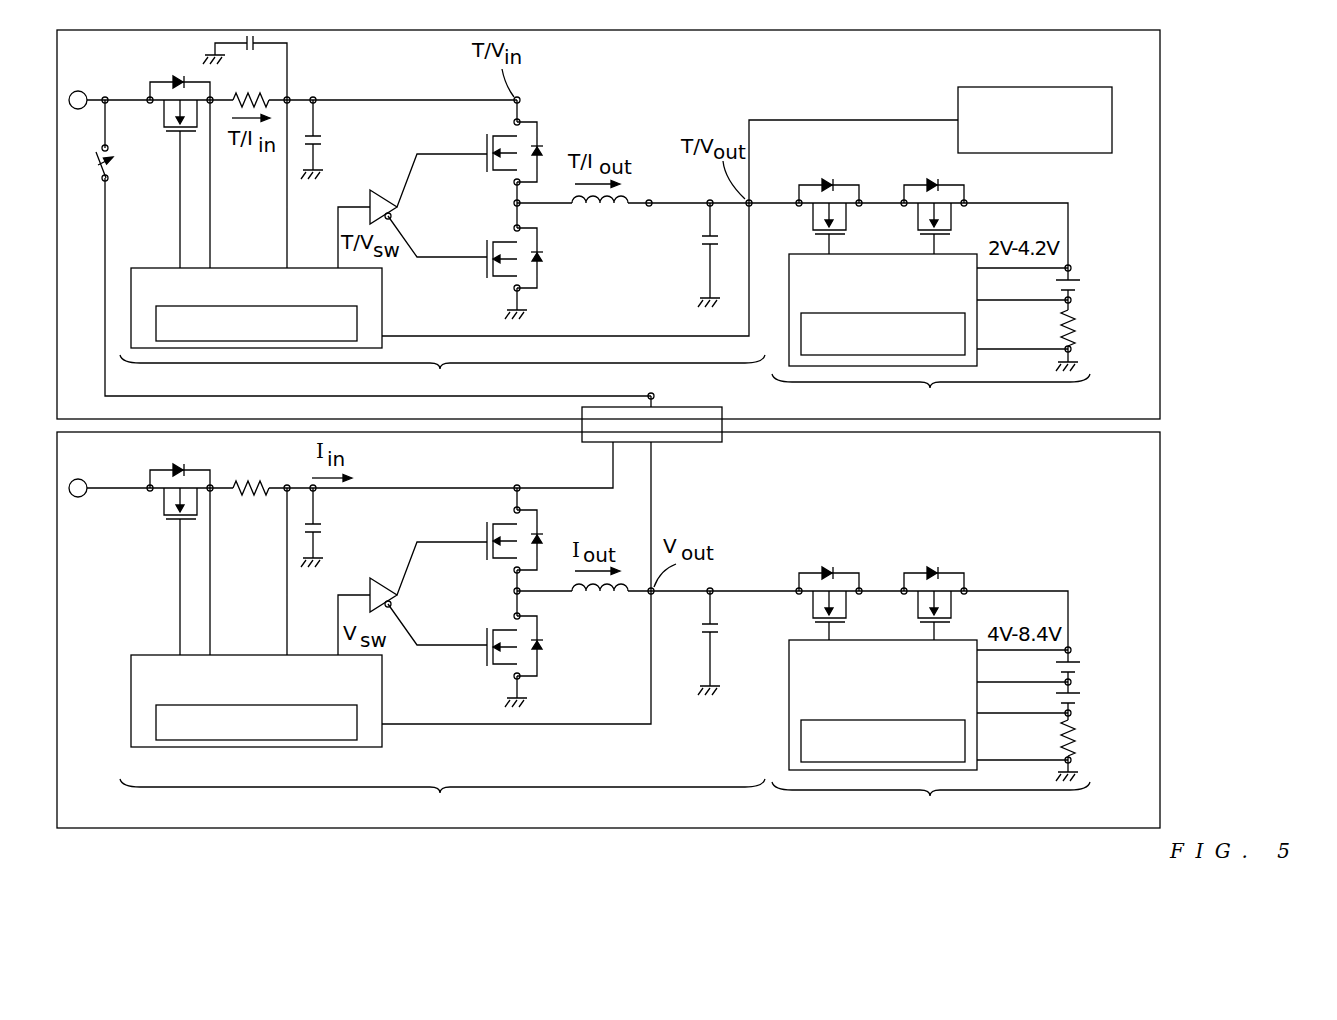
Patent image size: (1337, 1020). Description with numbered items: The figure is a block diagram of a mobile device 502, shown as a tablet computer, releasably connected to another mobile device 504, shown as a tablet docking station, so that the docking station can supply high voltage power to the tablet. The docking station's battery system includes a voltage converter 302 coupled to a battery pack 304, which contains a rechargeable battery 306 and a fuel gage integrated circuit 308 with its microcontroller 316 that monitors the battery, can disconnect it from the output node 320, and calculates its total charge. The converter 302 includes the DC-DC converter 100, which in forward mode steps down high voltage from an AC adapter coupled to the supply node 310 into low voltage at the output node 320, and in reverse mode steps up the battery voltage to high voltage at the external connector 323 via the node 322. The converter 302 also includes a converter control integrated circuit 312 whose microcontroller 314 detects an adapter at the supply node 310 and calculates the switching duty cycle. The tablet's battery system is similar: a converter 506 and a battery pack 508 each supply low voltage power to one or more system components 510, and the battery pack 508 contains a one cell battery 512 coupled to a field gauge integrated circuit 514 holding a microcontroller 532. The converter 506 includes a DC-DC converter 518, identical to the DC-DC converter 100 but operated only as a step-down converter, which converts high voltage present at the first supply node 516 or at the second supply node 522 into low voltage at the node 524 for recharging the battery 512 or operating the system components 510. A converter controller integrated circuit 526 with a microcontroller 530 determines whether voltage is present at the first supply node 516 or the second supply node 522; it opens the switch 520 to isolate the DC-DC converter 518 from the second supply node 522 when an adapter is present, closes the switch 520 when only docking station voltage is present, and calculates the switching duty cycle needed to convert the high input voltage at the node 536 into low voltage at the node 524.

The mobile device (tablet) 502 is at (1150, 67).
The mobile device (docking station) 504 is at (1148, 472).
The first supply node 516 is at (83, 91).
The switch 520 is at (98, 181).
The converter controller integrated circuit (CCIC) 526 is at (165, 266).
The microcontroller 530 is at (312, 306).
The node 536 is at (521, 98).
The DC-DC converter 518 is at (610, 107).
The system component(s) 510 is at (1010, 86).
The node 524 is at (753, 199).
The field gauge integrated circuit (FGIC) 514 is at (790, 254).
The microcontroller 532 is at (905, 313).
The one cell battery 512 is at (1085, 290).
The converter 506 is at (442, 376).
The second supply node 522 is at (656, 395).
The battery pack 508 is at (931, 395).
The supply node 310 is at (83, 479).
The converter control integrated circuit (CCIC) 312 is at (150, 653).
The microcontroller 314 is at (312, 705).
The node 322 is at (519, 486).
The external connector 323 is at (718, 442).
The output node 320 is at (653, 594).
The DC-DC converter 100 is at (591, 640).
The microcontroller 316 is at (900, 720).
The battery 306 is at (1085, 698).
The fuel gage integrated circuit (FGIC) 308 is at (788, 722).
The voltage converter 302 is at (442, 801).
The battery pack 304 is at (931, 802).